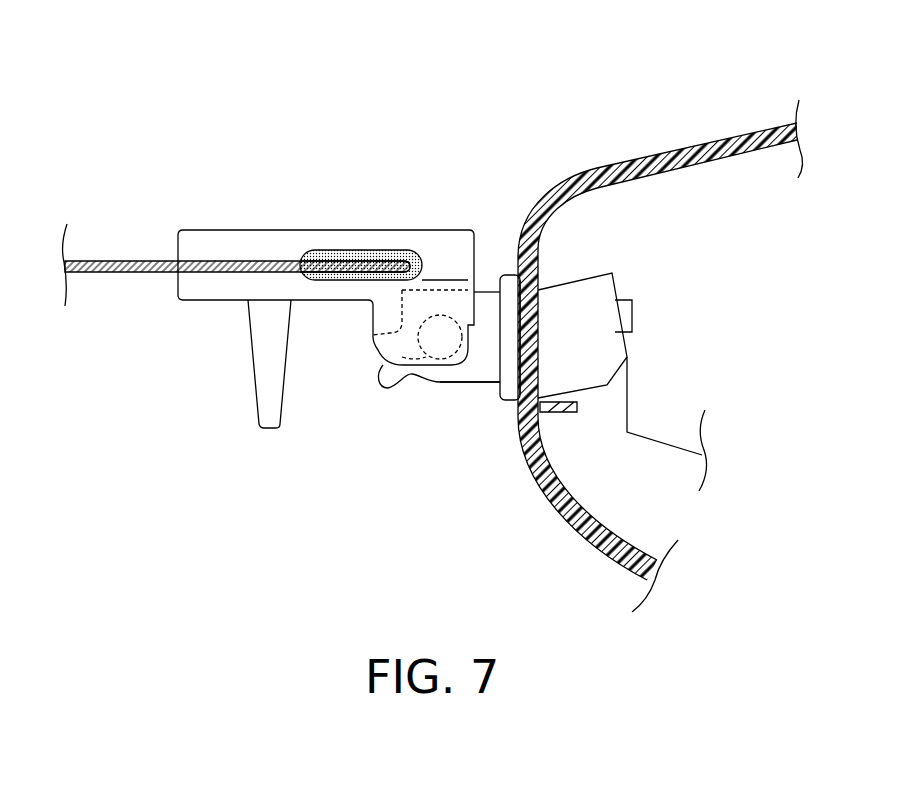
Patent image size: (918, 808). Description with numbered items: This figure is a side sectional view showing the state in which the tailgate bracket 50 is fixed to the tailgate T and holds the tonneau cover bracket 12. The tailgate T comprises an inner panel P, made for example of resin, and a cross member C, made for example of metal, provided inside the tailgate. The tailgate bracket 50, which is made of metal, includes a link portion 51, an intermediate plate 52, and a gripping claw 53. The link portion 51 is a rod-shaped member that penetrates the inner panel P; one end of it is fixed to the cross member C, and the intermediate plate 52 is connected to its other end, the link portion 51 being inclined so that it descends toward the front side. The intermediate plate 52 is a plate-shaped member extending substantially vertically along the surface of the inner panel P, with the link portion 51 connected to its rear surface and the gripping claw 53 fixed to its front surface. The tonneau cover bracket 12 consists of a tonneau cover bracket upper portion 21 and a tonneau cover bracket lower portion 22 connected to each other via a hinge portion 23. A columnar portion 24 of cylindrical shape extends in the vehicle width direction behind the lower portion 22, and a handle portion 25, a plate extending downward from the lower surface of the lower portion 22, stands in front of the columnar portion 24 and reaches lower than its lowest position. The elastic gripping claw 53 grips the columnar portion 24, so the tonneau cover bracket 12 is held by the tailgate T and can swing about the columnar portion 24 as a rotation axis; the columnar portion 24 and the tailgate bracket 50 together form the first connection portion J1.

The tonneau cover bracket 12 is at (235, 187).
The tonneau cover bracket upper portion 21 is at (335, 232).
The tonneau cover bracket lower portion 22 is at (217, 295).
The hinge portion 23 is at (380, 252).
The columnar portion 24 is at (373, 335).
The handle portion 25 is at (258, 385).
The tailgate bracket 50 is at (500, 262).
The link portion 51 is at (593, 340).
The intermediate plate 52 is at (507, 343).
The gripping claw 53 is at (442, 383).
The first connection portion J1 is at (423, 390).
The tailgate T is at (710, 62).
The inner panel P is at (597, 170).
The cross member C is at (732, 267).